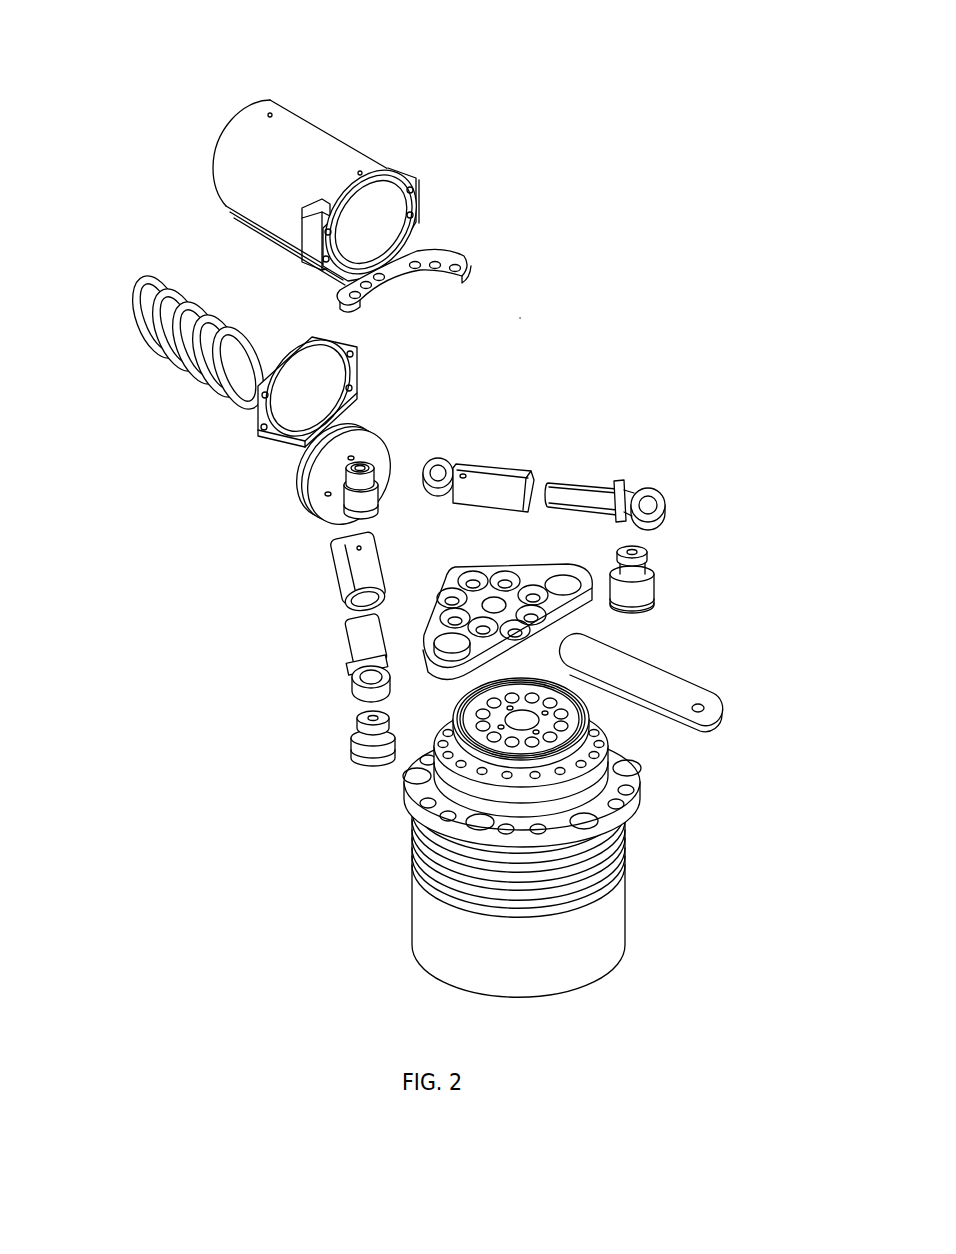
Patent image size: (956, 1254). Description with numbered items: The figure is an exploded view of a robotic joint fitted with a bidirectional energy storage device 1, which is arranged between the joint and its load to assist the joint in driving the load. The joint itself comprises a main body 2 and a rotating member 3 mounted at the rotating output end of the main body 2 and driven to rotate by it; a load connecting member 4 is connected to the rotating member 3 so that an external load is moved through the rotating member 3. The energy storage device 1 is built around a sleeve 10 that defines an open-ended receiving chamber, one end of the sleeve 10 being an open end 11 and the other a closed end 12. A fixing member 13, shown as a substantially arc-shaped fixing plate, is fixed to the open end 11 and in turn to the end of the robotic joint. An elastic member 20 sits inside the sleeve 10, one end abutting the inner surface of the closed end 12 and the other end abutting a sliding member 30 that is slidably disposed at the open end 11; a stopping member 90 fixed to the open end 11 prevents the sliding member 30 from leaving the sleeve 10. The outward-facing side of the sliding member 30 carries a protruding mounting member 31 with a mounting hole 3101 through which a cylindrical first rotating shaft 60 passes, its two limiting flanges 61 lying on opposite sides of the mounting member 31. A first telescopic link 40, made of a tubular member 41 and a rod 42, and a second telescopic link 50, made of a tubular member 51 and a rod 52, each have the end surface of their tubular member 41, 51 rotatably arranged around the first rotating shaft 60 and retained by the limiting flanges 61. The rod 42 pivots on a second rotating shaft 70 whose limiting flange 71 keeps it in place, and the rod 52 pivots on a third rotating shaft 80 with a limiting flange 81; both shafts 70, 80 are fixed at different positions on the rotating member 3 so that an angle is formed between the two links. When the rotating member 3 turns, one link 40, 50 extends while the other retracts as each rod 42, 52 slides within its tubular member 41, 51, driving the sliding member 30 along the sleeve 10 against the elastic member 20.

The bidirectional energy storage device 1 is at (520, 318).
The main body 2 is at (627, 860).
The rotating member 3 is at (558, 620).
The load connecting member 4 is at (660, 687).
The sleeve 10 is at (368, 150).
The open end 11 is at (387, 173).
The closed end 12 is at (256, 114).
The fixing member 13 is at (430, 257).
The elastic member 20 is at (192, 293).
The sliding member 30 is at (298, 512).
The mounting member 31 is at (357, 497).
The mounting hole 3101 is at (380, 470).
The first telescopic link 40 is at (602, 382).
The tubular member 41 is at (495, 473).
The rod 42 is at (597, 485).
The second telescopic link 50 is at (336, 627).
The tubular member 51 is at (348, 580).
The rod 52 is at (355, 640).
The first rotating shaft 60 is at (343, 483).
The limiting flange 61 is at (364, 460).
The second rotating shaft 70 is at (652, 583).
The limiting flange 71 is at (645, 548).
The third rotating shaft 80 is at (345, 745).
The limiting flange 81 is at (356, 720).
The stopping member 90 is at (265, 415).